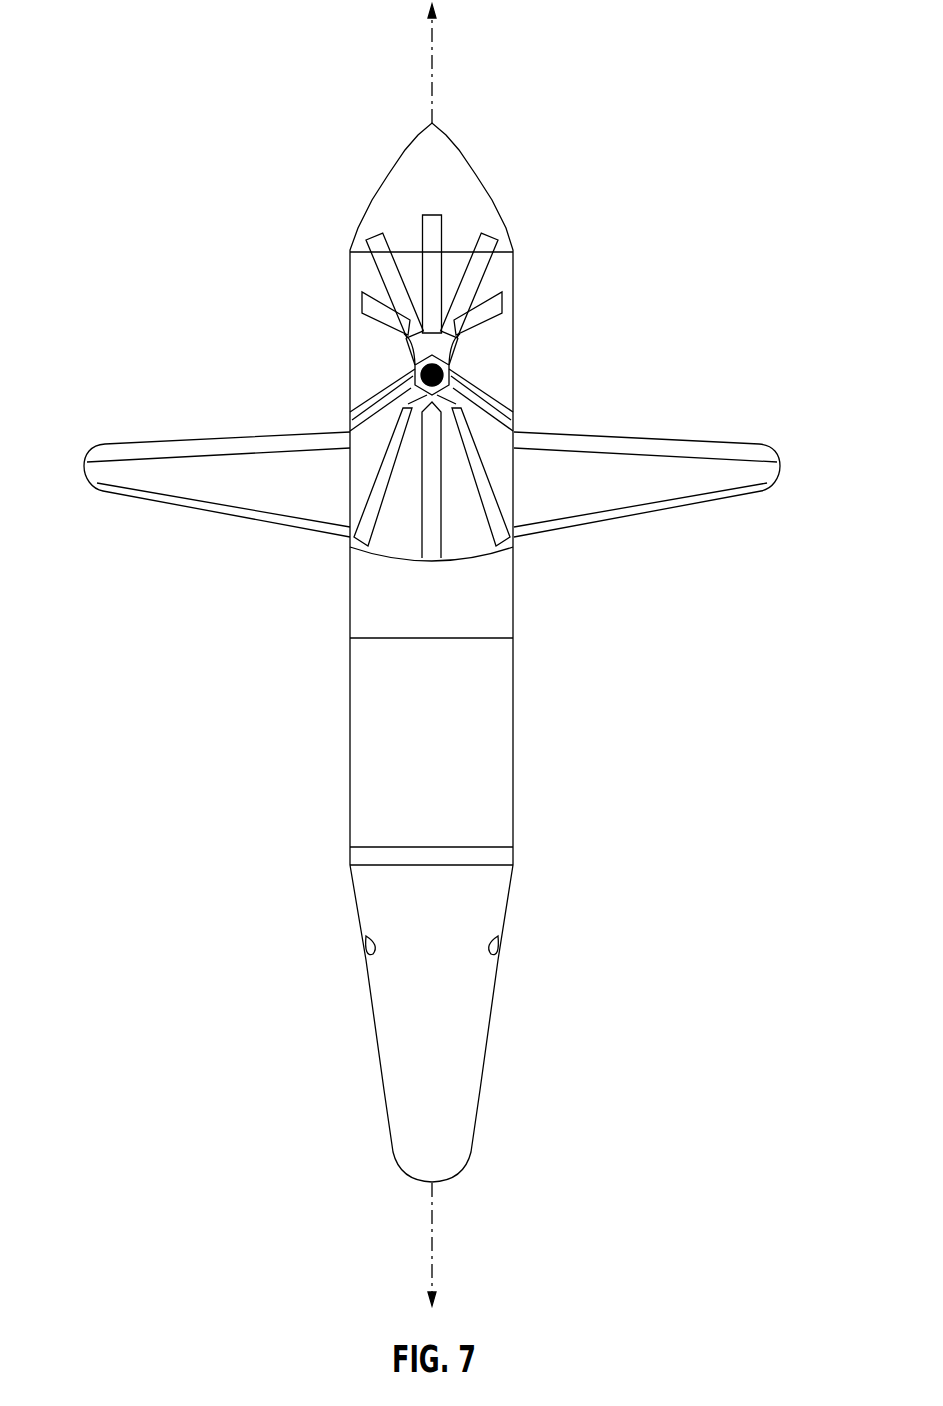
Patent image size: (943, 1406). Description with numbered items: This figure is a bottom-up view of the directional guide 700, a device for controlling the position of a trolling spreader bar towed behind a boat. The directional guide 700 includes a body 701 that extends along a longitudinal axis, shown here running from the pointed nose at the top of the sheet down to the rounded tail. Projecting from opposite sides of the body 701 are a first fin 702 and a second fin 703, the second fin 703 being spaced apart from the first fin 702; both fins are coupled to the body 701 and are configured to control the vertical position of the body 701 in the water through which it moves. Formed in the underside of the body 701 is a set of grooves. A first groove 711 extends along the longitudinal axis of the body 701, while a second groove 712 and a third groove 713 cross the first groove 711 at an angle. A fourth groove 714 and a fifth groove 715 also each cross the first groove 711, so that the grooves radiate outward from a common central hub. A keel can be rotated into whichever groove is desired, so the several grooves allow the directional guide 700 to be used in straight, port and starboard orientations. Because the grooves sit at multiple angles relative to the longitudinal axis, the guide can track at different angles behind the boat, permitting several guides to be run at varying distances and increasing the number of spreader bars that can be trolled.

The directional guide 700 is at (136, 44).
The body 701 is at (514, 1102).
The first fin 702 is at (132, 470).
The second fin 703 is at (748, 462).
The first groove 711 is at (431, 560).
The second groove 712 is at (348, 537).
The third groove 713 is at (516, 537).
The fourth groove 714 is at (348, 422).
The fifth groove 715 is at (516, 422).